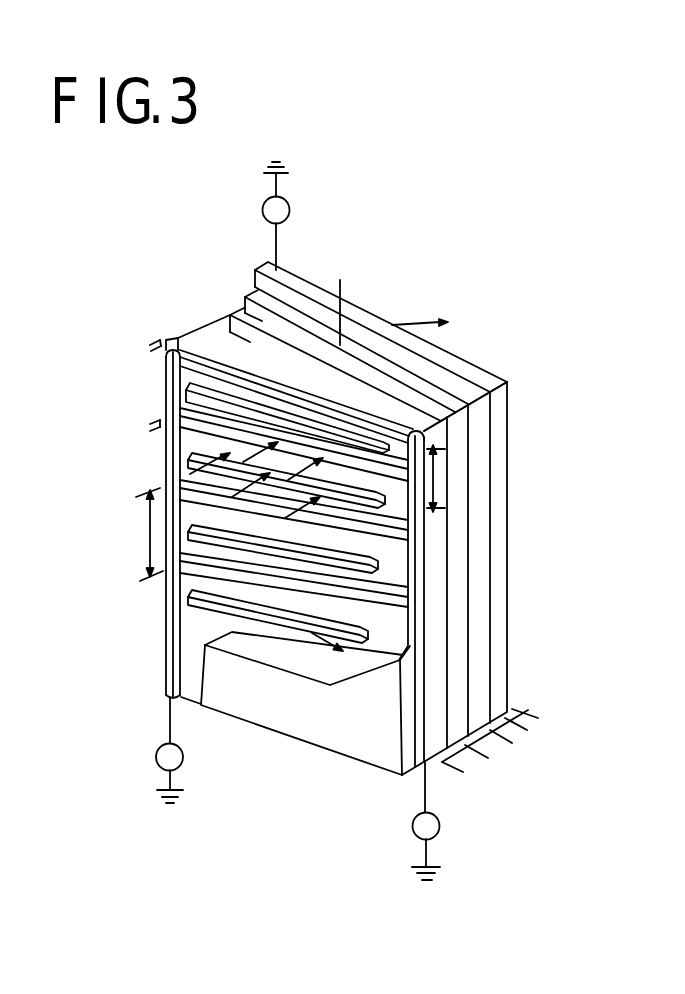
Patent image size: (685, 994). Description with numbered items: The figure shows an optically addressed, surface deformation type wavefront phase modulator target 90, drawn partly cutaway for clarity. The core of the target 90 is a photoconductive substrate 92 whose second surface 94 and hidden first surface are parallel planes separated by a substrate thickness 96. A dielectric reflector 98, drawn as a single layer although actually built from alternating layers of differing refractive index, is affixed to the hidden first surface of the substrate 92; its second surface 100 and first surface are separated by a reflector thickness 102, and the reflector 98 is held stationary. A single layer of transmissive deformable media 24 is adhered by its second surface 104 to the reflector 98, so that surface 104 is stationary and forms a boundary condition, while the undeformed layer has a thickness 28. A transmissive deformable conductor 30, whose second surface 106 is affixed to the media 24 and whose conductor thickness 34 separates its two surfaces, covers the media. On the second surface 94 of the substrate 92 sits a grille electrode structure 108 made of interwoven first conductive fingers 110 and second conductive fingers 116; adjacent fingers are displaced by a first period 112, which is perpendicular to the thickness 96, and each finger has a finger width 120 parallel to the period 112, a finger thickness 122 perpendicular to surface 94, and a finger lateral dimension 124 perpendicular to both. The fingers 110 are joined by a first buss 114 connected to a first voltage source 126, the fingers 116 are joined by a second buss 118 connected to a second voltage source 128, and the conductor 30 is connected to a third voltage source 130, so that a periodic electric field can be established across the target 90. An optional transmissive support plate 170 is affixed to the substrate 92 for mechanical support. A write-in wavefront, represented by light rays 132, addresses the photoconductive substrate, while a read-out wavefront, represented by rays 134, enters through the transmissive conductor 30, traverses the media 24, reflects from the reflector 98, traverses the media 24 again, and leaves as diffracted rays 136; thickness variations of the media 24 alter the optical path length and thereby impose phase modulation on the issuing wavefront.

The transmissive deformable media 24 is at (484, 512).
The thickness 28 is at (525, 728).
The transmissive deformable conductor 30 is at (500, 485).
The conductor thickness 34 is at (527, 716).
The optically addressed phase modulator target 90 is at (527, 628).
The photoconductive substrate 92 is at (440, 702).
The second surface 94 is at (387, 632).
The substrate thickness 96 is at (470, 762).
The dielectric reflector 98 is at (463, 663).
The second surface 100 is at (229, 314).
The reflector thickness 102 is at (496, 745).
The second surface 104 is at (239, 312).
The second surface 106 is at (249, 299).
The grille electrode structure 108 is at (150, 455).
The first conductive fingers 110 is at (165, 368).
The first period 112 is at (146, 536).
The first buss 114 is at (168, 384).
The second conductive fingers 116 is at (396, 534).
The second buss 118 is at (420, 597).
The finger width 120 is at (158, 428).
The finger thickness 122 is at (152, 343).
The finger lateral dimension 124 is at (285, 633).
The first voltage source 126 is at (158, 763).
The second voltage source 128 is at (411, 836).
The third voltage source 130 is at (290, 207).
The light rays 132 is at (243, 480).
The rays 134 is at (313, 237).
The diffracted rays 136 is at (443, 317).
The transmissive support plate 170 is at (386, 746).